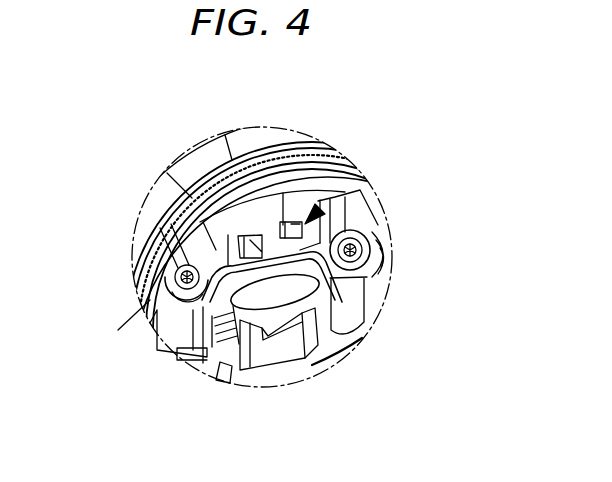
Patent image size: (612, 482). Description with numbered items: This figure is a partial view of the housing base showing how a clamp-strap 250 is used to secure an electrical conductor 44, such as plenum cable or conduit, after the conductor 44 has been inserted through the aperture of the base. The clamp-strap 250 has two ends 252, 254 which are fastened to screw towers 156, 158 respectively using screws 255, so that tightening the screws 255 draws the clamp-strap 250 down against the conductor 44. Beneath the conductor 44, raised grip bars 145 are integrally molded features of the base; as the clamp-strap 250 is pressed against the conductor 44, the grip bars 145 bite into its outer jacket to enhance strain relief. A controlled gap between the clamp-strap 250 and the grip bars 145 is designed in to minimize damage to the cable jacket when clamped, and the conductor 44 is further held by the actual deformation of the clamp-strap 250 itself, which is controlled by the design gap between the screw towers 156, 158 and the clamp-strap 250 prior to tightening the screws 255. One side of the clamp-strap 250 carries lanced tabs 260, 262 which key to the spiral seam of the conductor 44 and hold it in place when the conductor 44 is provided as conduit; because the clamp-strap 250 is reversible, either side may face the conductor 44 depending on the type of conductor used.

The electrical conductor 44 is at (207, 148).
The grip bars 145 is at (204, 345).
The screw tower 156 is at (170, 337).
The screw tower 158 is at (372, 312).
The clamp-strap 250 is at (316, 201).
The clamp-strap end 252 is at (170, 300).
The clamp-strap end 254 is at (376, 268).
The screws 255 is at (168, 276).
The lanced tab 260 is at (213, 233).
The lanced tab 262 is at (291, 222).